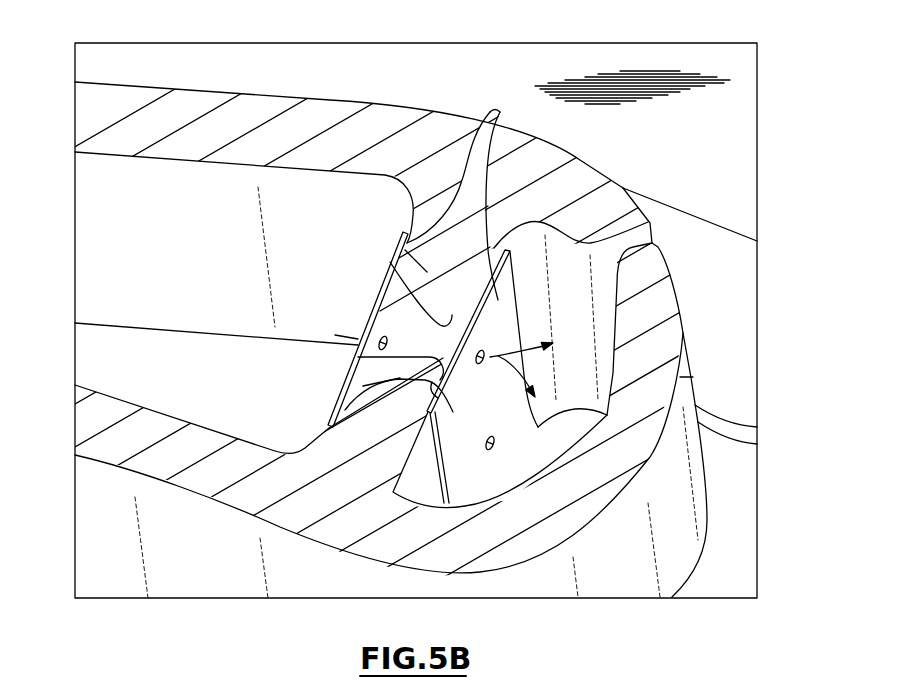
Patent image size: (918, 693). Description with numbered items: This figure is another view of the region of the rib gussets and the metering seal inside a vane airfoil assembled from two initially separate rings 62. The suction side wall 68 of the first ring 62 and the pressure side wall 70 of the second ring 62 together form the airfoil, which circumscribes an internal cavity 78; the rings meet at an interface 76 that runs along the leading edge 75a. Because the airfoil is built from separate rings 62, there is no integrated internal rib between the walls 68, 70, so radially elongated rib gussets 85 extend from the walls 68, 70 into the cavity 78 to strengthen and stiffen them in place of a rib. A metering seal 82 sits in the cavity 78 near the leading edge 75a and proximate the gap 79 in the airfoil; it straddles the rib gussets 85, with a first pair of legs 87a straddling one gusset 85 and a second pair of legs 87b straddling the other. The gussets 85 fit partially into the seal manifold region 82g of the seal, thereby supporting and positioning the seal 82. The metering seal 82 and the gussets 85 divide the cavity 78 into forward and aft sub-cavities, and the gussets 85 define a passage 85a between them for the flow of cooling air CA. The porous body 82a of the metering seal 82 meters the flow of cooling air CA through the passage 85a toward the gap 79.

The ring 62 is at (746, 260).
The suction side wall 68 is at (288, 96).
The pressure side wall 70 is at (142, 457).
The leading edge 75a is at (692, 378).
The interface 76 is at (730, 409).
The internal cavity 78 is at (226, 393).
The gap 79 is at (662, 233).
The metering seal 82 is at (345, 358).
The porous body 82a is at (518, 440).
The seal manifold region 82g is at (392, 283).
The rib gusset 85 is at (404, 242).
The passage 85a is at (415, 329).
The first pair of legs 87a is at (499, 110).
The second pair of legs 87b is at (453, 412).
The cooling air CA is at (532, 348).